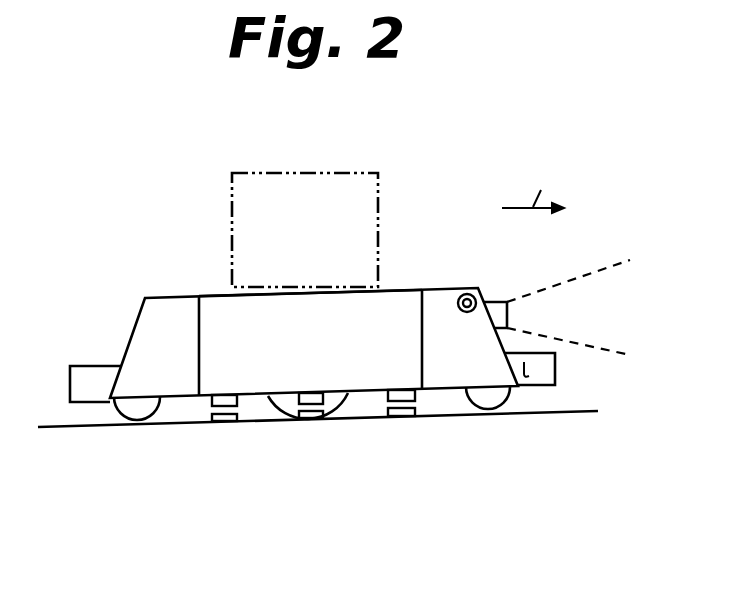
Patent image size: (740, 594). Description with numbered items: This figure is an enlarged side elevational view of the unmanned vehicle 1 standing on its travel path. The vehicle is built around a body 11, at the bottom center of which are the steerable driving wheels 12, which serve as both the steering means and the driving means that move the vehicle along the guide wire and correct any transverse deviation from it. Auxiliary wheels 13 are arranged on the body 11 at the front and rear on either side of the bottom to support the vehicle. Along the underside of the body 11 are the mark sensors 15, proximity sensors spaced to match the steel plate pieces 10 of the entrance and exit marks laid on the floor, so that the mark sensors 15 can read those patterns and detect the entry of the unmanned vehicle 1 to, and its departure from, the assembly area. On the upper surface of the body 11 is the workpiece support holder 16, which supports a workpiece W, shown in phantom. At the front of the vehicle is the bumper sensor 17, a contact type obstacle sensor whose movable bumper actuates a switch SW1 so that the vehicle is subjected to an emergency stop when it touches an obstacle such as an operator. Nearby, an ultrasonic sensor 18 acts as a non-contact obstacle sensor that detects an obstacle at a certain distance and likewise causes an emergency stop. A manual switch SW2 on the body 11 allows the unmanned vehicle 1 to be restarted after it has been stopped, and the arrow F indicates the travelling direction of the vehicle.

The unmanned vehicle 1 is at (431, 287).
The steel plate pieces 10 is at (301, 419).
The body 11 is at (140, 316).
The steerable driving wheels 12 is at (336, 401).
The auxiliary wheels 13 is at (138, 415).
The mark sensors 15 is at (224, 395).
The workpiece support holder 16 is at (222, 295).
The bumper sensor 17 is at (555, 372).
The ultrasonic sensor 18 is at (495, 300).
The workpiece W is at (377, 188).
The forward travelling direction F is at (533, 190).
The switch SW1 is at (526, 358).
The manual switch SW2 is at (467, 294).